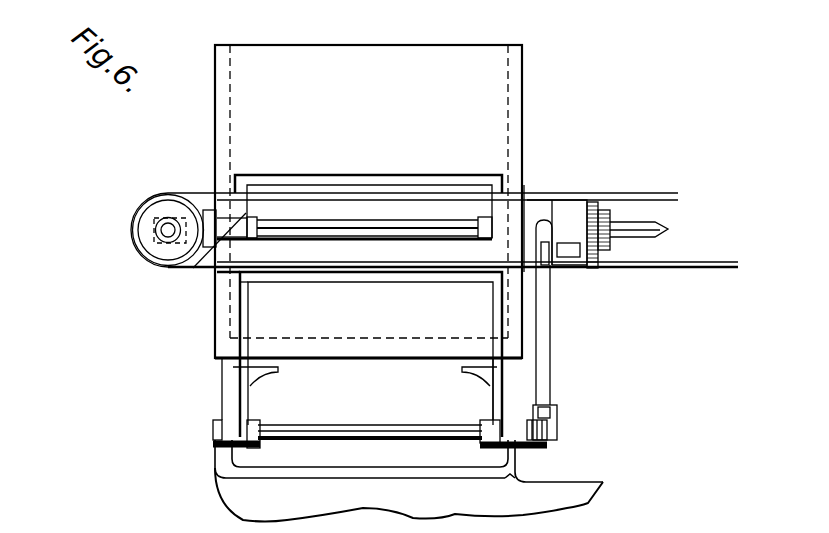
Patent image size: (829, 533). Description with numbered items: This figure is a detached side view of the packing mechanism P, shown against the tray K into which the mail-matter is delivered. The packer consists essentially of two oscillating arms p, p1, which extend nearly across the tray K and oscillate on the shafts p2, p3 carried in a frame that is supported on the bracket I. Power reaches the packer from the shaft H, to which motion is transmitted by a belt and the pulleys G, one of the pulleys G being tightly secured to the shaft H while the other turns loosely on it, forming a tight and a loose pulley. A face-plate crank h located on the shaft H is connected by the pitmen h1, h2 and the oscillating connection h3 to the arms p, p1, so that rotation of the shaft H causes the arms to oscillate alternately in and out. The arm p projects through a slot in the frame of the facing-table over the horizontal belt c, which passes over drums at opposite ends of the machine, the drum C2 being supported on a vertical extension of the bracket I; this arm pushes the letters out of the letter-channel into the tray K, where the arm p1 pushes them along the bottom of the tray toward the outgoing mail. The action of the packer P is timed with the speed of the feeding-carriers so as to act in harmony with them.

The tray K is at (382, 373).
The oscillating arm p is at (378, 184).
The shaft p2 is at (376, 232).
The oscillating arm p1 is at (372, 285).
The shaft p3 is at (331, 430).
The pulleys G is at (191, 192).
The drum C2 is at (157, 220).
The packing mechanism P is at (246, 291).
The horizontal belt c is at (554, 200).
The face-plate crank h is at (594, 201).
The pitman h1 is at (549, 233).
The pitman h2 is at (560, 300).
The oscillating connection h3 is at (558, 413).
The shaft H is at (668, 229).
The bracket I is at (409, 481).